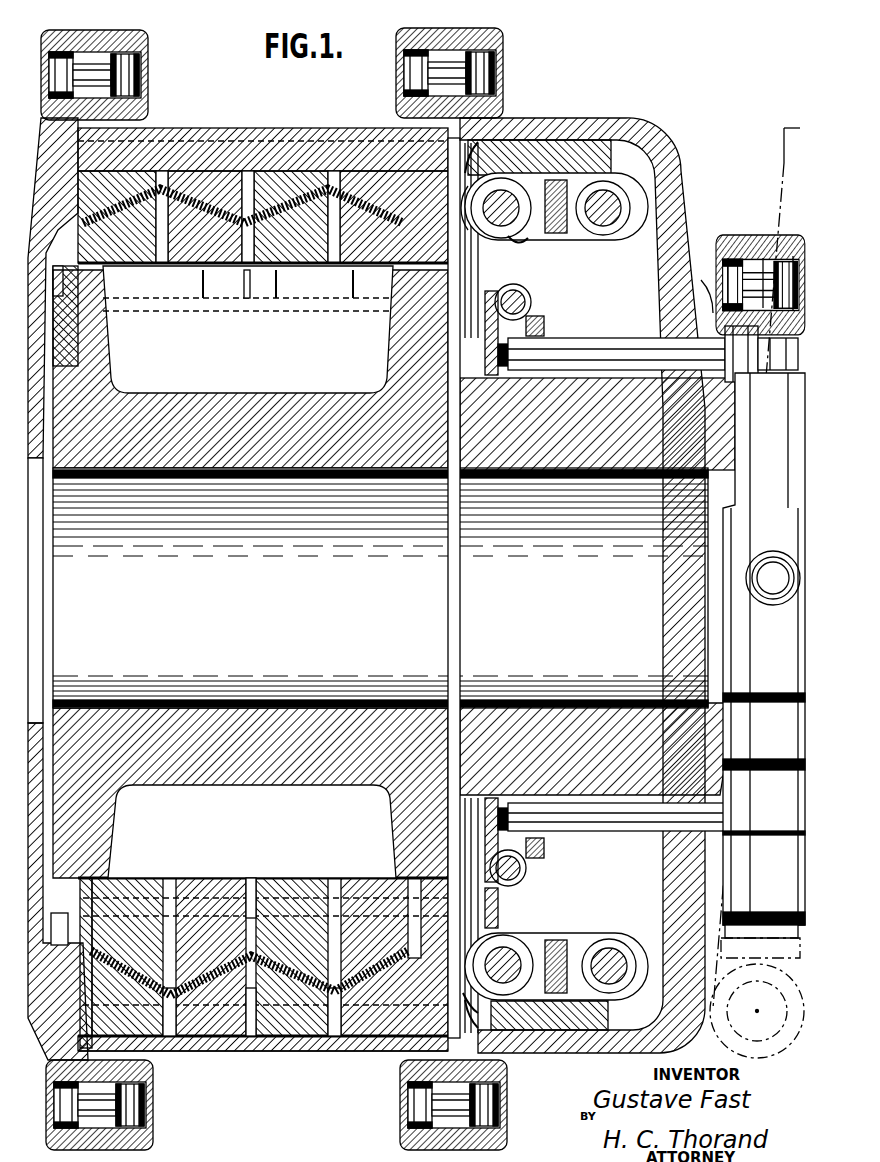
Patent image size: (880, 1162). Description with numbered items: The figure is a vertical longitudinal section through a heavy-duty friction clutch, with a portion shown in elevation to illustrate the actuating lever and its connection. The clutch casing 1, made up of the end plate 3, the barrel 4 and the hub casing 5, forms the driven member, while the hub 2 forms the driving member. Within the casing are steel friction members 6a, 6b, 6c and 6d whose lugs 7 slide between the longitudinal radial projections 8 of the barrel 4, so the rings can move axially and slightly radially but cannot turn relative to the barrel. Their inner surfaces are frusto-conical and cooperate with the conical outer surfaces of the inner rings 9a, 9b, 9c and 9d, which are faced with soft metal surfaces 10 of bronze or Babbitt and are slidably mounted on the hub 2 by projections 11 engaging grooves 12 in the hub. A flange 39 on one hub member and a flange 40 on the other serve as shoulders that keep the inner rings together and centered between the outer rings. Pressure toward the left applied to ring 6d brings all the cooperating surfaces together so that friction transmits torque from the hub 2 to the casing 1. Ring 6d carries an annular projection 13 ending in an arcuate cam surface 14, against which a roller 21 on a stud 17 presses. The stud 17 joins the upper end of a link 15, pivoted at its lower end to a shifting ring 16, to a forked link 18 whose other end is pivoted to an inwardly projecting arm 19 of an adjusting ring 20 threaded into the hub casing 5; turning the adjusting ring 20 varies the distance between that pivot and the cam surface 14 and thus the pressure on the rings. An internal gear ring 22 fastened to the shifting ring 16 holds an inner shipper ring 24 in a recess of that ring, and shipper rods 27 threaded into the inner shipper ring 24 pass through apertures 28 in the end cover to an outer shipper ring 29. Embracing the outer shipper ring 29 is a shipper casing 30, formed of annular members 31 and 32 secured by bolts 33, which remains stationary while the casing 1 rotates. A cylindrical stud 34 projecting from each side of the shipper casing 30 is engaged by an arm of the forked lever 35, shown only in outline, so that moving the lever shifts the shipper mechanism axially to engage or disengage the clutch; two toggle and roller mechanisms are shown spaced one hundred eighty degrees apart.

The clutch casing 1 is at (340, 1044).
The hub 2 is at (283, 702).
The end plate 3 is at (45, 165).
The barrel 4 is at (200, 128).
The hub casing 5 is at (518, 120).
The friction member 6a is at (110, 175).
The friction member 6b is at (215, 175).
The friction member 6c is at (285, 155).
The friction member 6d is at (357, 175).
The lug 7 is at (180, 125).
The radial projection 8 is at (322, 155).
The ring 9a is at (118, 285).
The ring 9b is at (195, 282).
The ring 9c is at (268, 282).
The ring 9d is at (345, 282).
The soft metal surface 10 is at (80, 224).
The projection 11 is at (235, 292).
The groove 12 is at (307, 282).
The annular projection 13 is at (384, 118).
The cam surface 14 is at (545, 140).
The link 15 is at (470, 258).
The shifting ring 16 is at (512, 300).
The stud 17 is at (510, 192).
The link 18 is at (640, 140).
The arm 19 is at (618, 222).
The adjusting ring 20 is at (580, 122).
The roller 21 is at (525, 222).
The internal gear ring 22 is at (538, 316).
The inner shipper ring 24 is at (513, 343).
The shipper rod 27 is at (586, 342).
The aperture 28 is at (662, 337).
The outer shipper ring 29 is at (697, 290).
The shipper casing 30 is at (741, 228).
The annular member 31 is at (720, 236).
The annular member 32 is at (787, 236).
The bolt 33 is at (755, 235).
The cylindrical stud 34 is at (765, 556).
The forked lever 35 is at (770, 155).
The flange 39 is at (58, 905).
The flange 40 is at (475, 848).